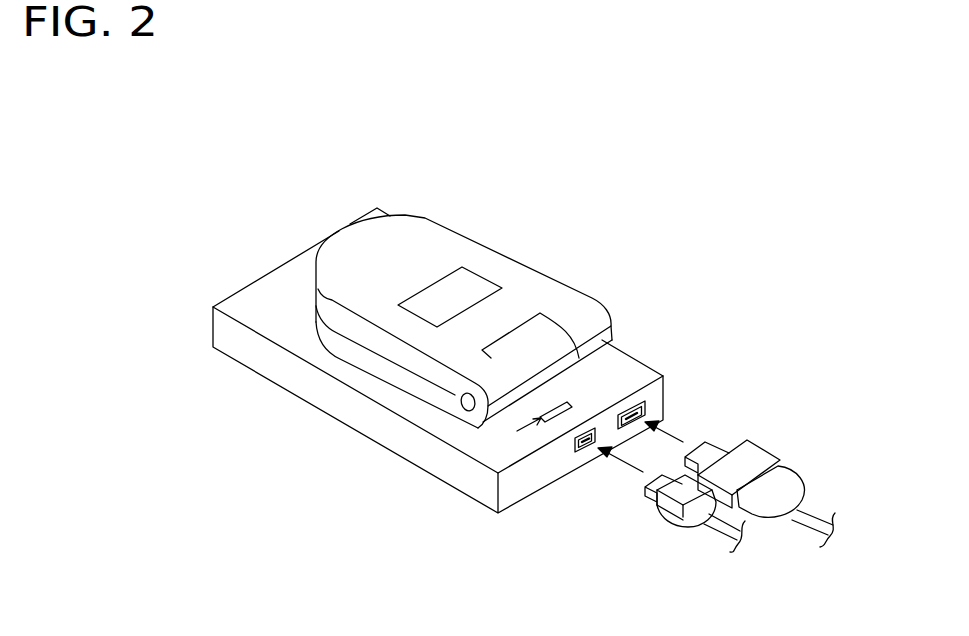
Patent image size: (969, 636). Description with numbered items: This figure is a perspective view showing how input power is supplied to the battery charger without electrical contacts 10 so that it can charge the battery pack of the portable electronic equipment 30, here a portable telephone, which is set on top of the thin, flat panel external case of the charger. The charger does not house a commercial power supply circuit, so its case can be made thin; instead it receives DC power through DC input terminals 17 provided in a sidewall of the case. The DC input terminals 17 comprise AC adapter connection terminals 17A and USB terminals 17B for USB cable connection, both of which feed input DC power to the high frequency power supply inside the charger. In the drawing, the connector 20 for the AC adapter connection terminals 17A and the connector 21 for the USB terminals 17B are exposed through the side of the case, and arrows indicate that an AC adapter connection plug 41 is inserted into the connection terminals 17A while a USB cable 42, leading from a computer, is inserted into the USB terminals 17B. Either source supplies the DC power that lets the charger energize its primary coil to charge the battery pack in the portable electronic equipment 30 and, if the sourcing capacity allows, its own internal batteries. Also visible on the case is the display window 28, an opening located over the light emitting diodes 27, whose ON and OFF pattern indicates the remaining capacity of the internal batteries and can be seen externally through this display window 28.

The battery charger without electrical contacts 10 is at (263, 230).
The portable electronic equipment 30 is at (540, 197).
The DC input terminals 17 is at (741, 236).
The AC adapter connection terminals 17A is at (681, 335).
The USB terminals 17B is at (612, 386).
The connector 20 is at (644, 411).
The connector 21 is at (585, 448).
The light emitting diodes 27 is at (557, 420).
The display window 28 is at (541, 421).
The AC adapter connection plug 41 is at (708, 456).
The USB cable 42 is at (652, 558).